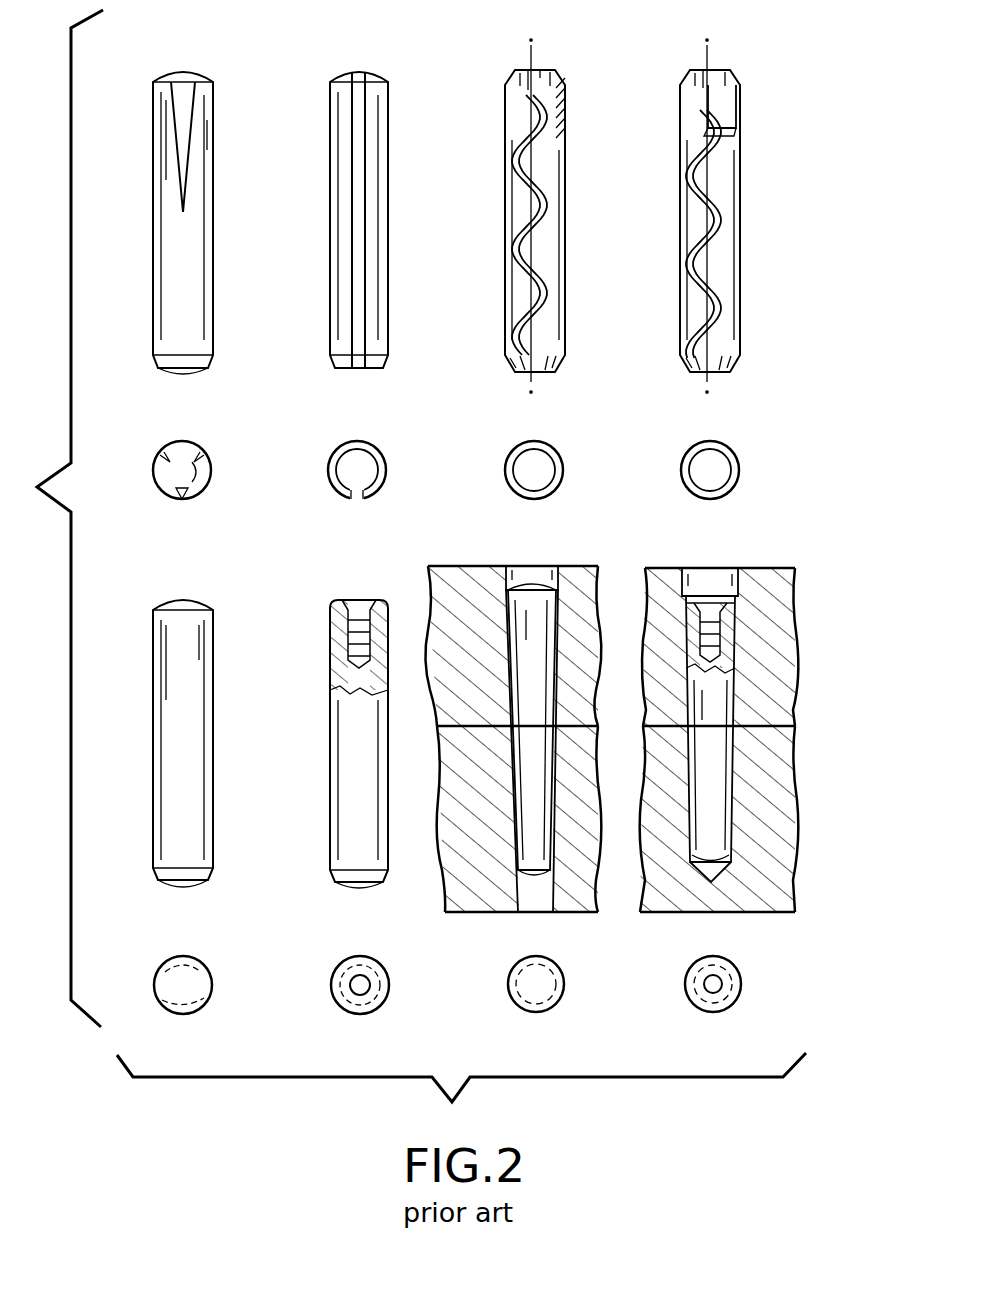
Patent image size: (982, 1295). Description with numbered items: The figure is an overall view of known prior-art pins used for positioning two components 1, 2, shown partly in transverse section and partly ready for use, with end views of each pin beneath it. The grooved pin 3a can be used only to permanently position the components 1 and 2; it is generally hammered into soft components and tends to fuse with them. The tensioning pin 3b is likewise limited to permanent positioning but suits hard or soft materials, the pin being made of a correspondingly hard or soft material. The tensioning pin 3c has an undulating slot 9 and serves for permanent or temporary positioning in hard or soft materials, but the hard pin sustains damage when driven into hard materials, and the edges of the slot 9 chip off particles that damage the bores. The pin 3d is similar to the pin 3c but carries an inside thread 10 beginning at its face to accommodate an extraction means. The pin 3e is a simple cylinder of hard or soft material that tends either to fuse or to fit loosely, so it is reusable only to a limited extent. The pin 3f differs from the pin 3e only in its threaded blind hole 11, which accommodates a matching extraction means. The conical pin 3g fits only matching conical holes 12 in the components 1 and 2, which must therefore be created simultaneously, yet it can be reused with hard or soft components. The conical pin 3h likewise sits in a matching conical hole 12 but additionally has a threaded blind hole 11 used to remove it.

The component 1 is at (464, 568).
The component 2 is at (465, 900).
The grooved pin 3a is at (214, 92).
The tensioning pin 3b is at (389, 92).
The tensioning pin 3c is at (556, 261).
The pin 3d is at (745, 269).
The pin 3e is at (214, 612).
The pin 3f is at (344, 772).
The conical pin 3g is at (541, 604).
The conical pin 3h is at (774, 755).
The undulating slot 9 is at (547, 200).
The inside thread 10 is at (739, 88).
The threaded blind hole 11 is at (357, 628).
The conical hole 12 is at (519, 572).